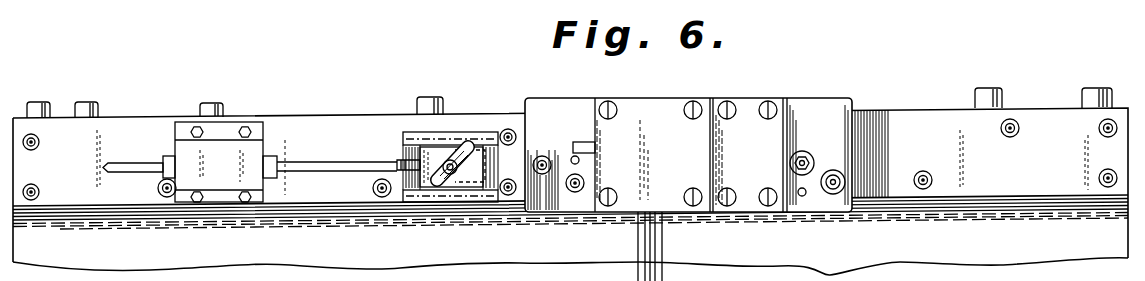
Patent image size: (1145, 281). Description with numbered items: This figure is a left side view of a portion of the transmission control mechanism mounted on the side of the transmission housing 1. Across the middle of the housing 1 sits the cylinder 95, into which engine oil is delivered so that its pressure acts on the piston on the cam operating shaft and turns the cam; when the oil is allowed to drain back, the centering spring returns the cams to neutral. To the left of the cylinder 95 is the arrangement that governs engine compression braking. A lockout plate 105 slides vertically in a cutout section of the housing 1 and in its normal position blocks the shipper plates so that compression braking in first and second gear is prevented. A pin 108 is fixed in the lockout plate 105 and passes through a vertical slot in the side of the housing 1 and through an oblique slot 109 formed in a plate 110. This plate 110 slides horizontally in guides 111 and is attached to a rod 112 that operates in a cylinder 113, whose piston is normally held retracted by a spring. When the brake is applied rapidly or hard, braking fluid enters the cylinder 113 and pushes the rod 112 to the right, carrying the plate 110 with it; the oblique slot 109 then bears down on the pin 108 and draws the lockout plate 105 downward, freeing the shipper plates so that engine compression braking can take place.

The housing 1 is at (887, 125).
The cylinder 95 is at (648, 125).
The lockout plate 105 is at (417, 195).
The pin 108 is at (433, 167).
The oblique slot 109 is at (463, 157).
The plate 110 is at (470, 185).
The guides 111 is at (403, 135).
The rod 112 is at (312, 160).
The cylinder 113 is at (225, 172).